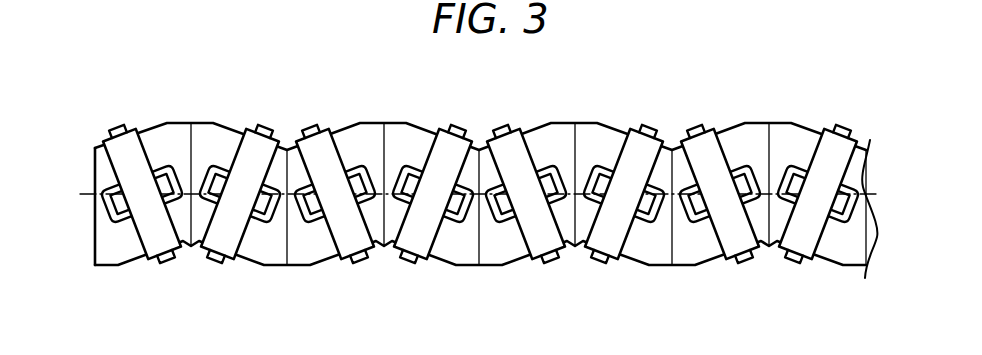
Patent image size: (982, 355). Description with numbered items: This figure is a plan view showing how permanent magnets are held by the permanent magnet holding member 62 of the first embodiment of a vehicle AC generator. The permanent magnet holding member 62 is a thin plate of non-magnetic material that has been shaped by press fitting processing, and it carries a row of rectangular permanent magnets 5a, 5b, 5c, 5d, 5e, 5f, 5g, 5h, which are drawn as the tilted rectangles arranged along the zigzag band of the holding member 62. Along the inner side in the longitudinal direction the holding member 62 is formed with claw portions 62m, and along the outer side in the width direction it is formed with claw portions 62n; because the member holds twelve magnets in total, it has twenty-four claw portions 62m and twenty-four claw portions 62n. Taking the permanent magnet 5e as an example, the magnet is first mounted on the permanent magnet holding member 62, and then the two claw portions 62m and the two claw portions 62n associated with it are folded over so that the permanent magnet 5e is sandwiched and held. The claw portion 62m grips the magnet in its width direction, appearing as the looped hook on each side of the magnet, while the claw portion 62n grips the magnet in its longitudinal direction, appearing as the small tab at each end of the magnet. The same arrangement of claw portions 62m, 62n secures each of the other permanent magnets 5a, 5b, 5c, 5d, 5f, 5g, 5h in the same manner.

The permanent magnet 5a is at (137, 165).
The permanent magnet 5b is at (240, 158).
The permanent magnet 5c is at (330, 160).
The permanent magnet 5d is at (437, 158).
The permanent magnet 5e is at (503, 153).
The permanent magnet 5f is at (630, 157).
The permanent magnet 5g is at (710, 160).
The permanent magnet 5h is at (825, 150).
The permanent magnet holding member 62 is at (498, 262).
The claw portion 62m is at (489, 152).
The claw portion 62n is at (489, 192).